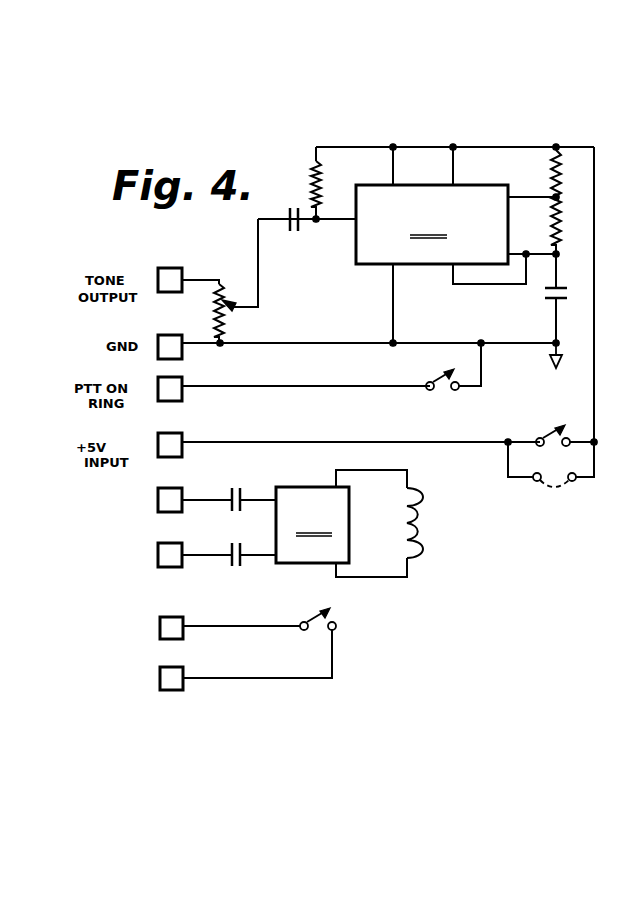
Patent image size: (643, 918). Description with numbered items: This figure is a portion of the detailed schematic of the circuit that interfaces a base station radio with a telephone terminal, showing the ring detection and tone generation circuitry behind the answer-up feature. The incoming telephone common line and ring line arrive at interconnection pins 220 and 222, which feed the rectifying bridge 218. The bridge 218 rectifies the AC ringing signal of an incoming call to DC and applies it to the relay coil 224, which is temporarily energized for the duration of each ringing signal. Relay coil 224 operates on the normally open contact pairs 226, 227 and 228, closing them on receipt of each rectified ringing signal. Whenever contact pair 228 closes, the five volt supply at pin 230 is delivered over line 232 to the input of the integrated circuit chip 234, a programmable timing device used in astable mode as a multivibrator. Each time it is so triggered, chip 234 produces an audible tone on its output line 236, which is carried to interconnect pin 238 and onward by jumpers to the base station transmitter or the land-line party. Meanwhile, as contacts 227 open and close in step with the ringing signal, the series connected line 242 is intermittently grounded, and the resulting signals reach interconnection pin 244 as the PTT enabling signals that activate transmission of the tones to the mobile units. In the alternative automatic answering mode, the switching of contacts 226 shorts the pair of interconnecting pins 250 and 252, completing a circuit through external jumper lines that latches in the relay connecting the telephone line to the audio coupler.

The interconnect pin 238 is at (168, 268).
The output line 236 is at (259, 268).
The integrated circuit chip 234 is at (376, 256).
The interconnection pin 244 is at (178, 377).
The series connected line 242 is at (280, 386).
The contact pair 227 is at (437, 382).
The pin 230 is at (178, 430).
The line 232 is at (326, 442).
The contact pair 228 is at (545, 432).
The interconnection pin 220 is at (175, 488).
The interconnection pin 222 is at (175, 543).
The rectifying bridge 218 is at (312, 525).
The relay coil 224 is at (422, 532).
The interconnecting pin 250 is at (170, 617).
The contact pair 226 is at (311, 620).
The interconnecting pin 252 is at (168, 686).